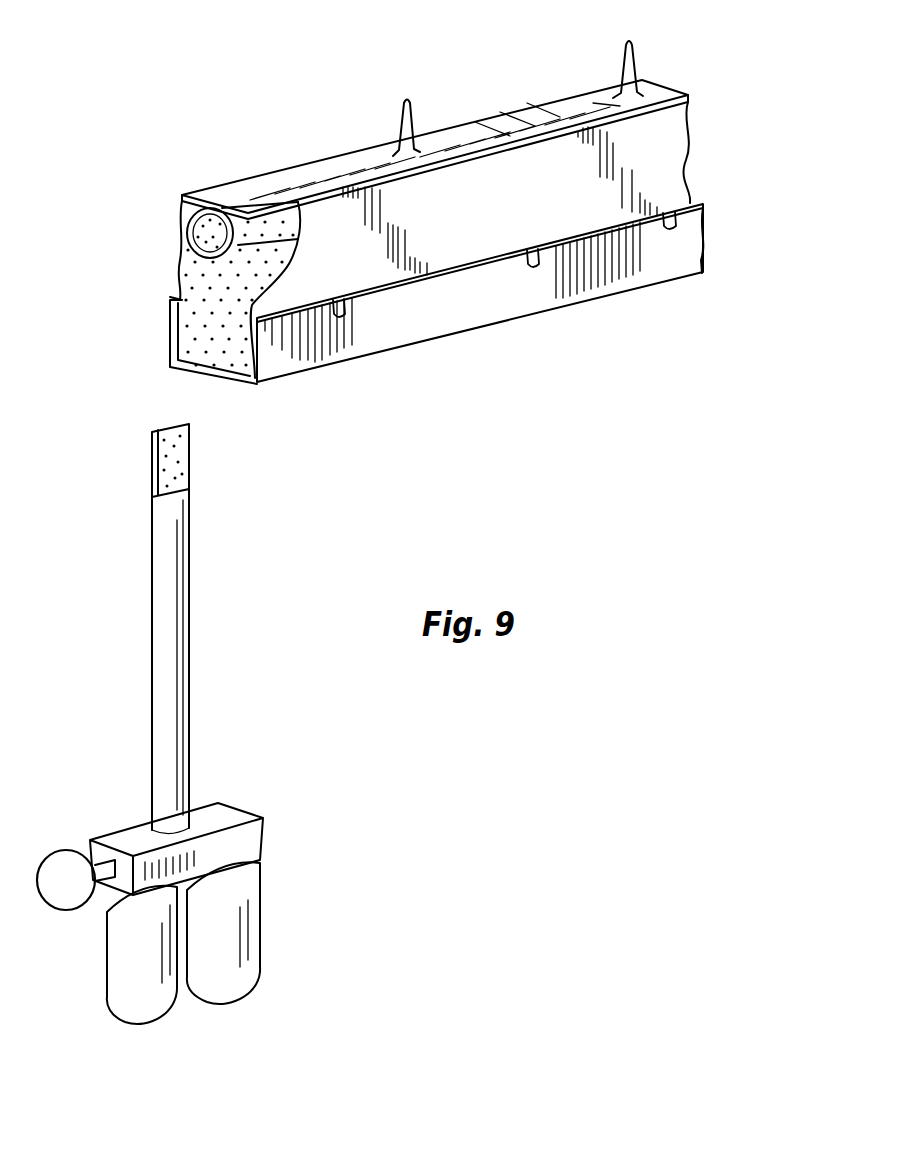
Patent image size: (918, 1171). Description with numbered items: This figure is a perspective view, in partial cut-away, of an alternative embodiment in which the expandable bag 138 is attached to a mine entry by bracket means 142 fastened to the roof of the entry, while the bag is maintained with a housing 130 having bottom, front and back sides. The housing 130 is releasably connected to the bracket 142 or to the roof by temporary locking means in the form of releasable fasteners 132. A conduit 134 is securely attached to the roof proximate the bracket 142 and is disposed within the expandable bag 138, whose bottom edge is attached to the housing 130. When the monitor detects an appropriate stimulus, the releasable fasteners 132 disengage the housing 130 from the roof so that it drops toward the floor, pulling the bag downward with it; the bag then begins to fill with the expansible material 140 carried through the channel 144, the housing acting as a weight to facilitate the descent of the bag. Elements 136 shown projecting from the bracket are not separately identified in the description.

The housing 130 is at (503, 295).
The releasable fasteners 132 is at (340, 312).
The conduit 134 is at (240, 208).
The spikes 136 is at (402, 130).
The expandable bag 138 is at (653, 161).
The expansible material 140 is at (205, 280).
The bracket means 142 is at (453, 133).
The channel 144 is at (163, 470).